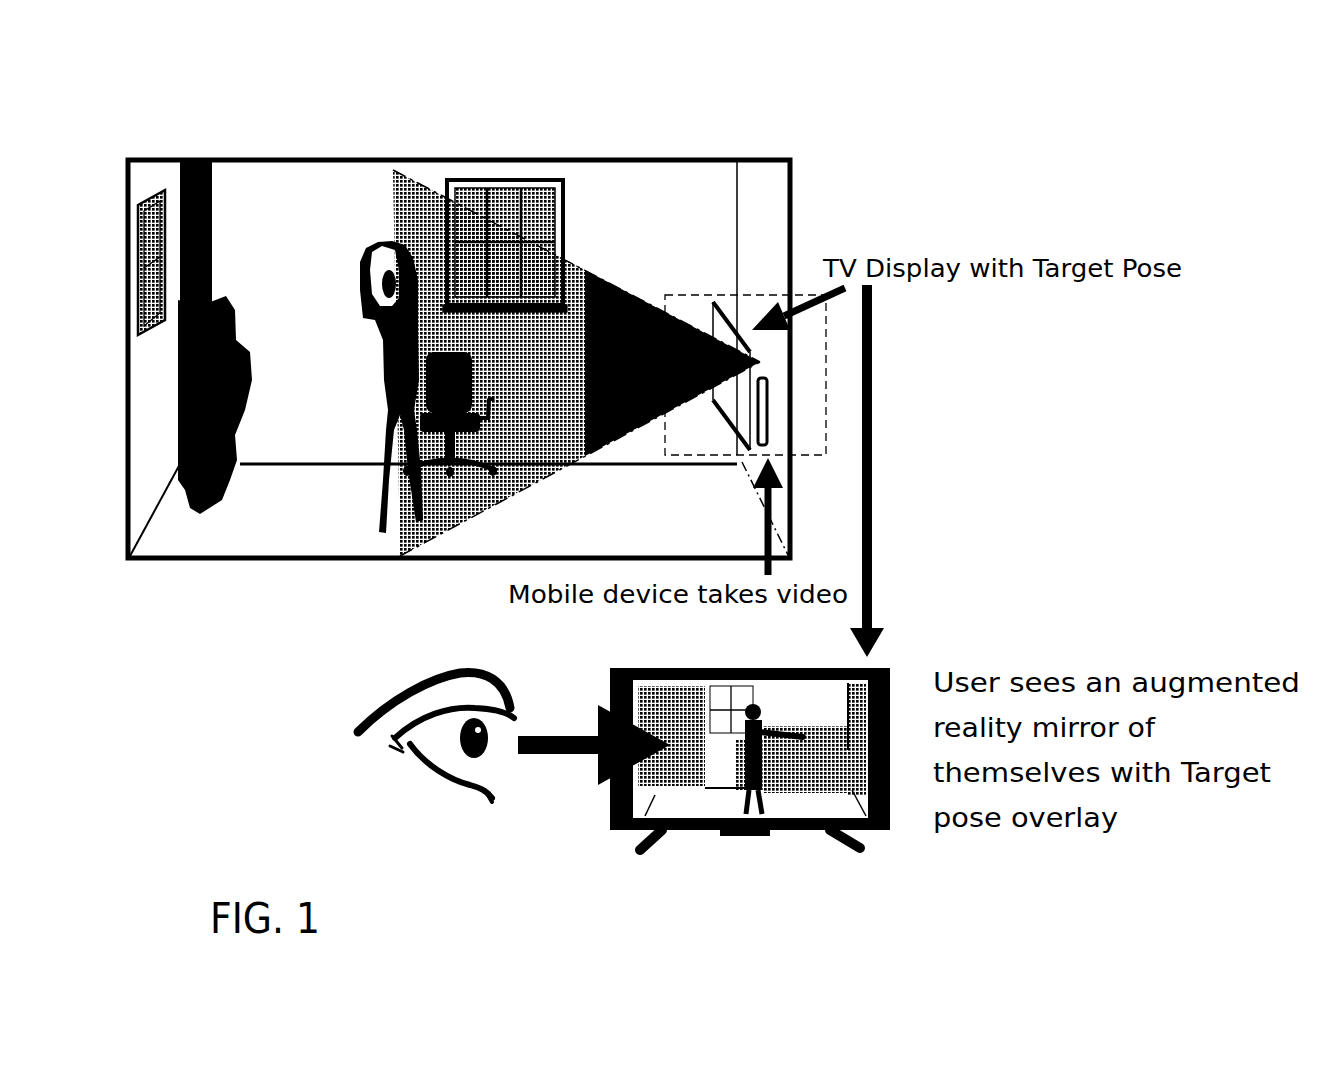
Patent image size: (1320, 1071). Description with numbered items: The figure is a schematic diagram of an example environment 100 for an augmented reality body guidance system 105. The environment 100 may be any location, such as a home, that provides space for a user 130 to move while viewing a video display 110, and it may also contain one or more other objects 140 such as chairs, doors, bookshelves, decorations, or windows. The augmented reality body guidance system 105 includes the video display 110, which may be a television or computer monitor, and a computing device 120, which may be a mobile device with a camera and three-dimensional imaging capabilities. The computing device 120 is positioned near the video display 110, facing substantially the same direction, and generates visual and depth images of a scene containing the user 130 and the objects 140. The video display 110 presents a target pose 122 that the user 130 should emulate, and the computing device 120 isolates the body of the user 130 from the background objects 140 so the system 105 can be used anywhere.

The environment 100 is at (157, 72).
The augmented reality body guidance system 105 is at (825, 362).
The video display 110 is at (715, 300).
The computing device 120 is at (768, 425).
The target pose 122 is at (728, 818).
The user 130 is at (372, 240).
The objects 140 is at (140, 270).